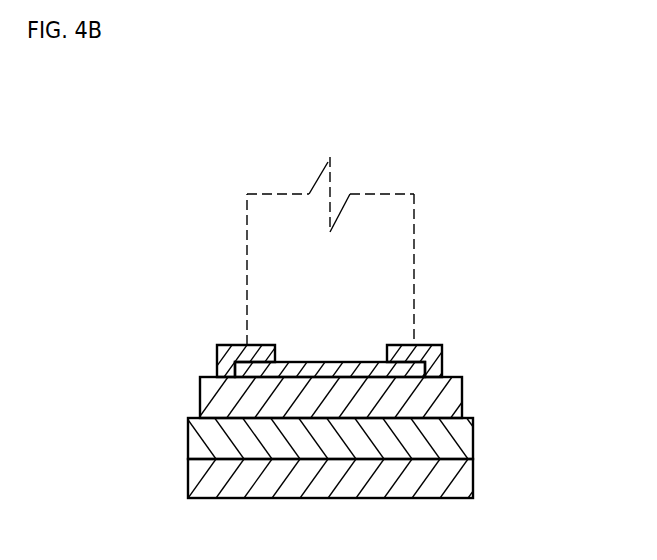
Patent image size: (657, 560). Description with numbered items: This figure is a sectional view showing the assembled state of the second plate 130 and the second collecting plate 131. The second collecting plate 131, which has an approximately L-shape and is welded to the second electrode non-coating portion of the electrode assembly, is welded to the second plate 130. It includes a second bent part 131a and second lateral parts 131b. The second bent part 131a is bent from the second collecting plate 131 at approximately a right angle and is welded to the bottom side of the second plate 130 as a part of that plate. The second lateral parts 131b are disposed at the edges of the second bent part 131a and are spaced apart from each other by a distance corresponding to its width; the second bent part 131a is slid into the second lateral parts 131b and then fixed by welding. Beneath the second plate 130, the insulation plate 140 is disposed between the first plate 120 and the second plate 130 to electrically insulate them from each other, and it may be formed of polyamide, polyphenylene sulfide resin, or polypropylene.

The first plate 120 is at (467, 480).
The insulation plate 140 is at (465, 443).
The second plate 130 is at (453, 398).
The second collecting plate 131 is at (260, 222).
The second bent part 131a is at (370, 362).
The second lateral parts 131b is at (218, 356).